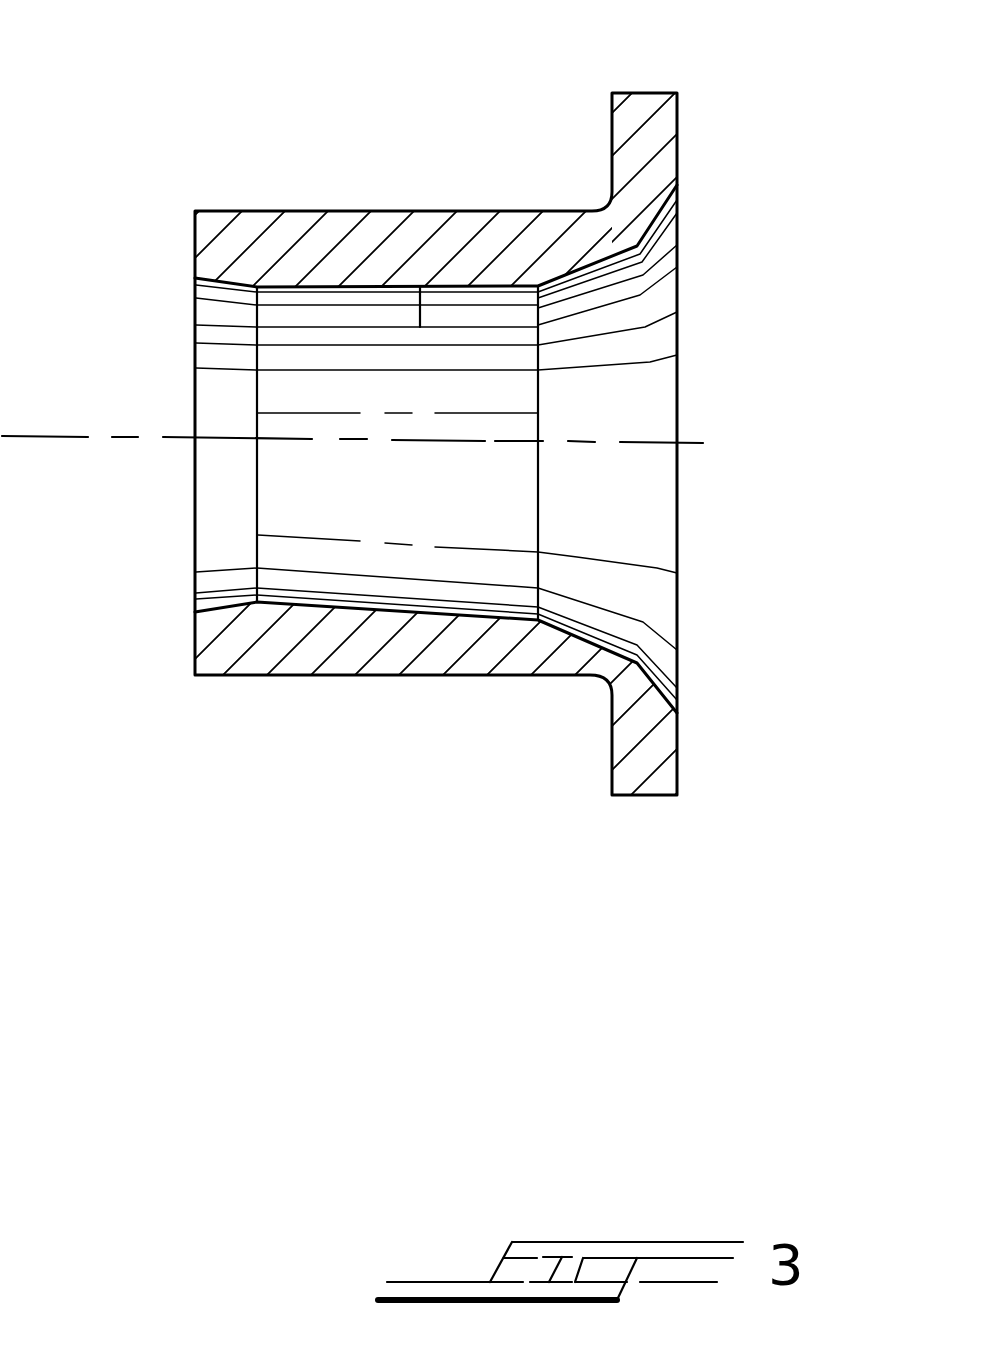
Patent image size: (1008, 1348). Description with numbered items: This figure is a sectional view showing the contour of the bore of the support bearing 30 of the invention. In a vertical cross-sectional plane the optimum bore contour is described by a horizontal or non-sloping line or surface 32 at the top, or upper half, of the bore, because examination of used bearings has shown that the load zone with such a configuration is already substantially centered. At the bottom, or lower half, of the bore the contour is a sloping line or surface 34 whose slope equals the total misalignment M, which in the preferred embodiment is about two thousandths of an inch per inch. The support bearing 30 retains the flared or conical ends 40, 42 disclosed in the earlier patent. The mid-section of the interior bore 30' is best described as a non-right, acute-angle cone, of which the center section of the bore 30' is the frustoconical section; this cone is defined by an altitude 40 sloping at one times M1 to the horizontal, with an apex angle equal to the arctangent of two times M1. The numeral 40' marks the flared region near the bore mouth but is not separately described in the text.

The support bearing 30 is at (504, 674).
The interior bore 30' is at (302, 451).
The horizontal surface 32 is at (420, 327).
The sloping surface 34 is at (397, 612).
The flared end 40 is at (642, 494).
The chamfered mouth 40' is at (162, 427).
The flared end 42 is at (648, 236).